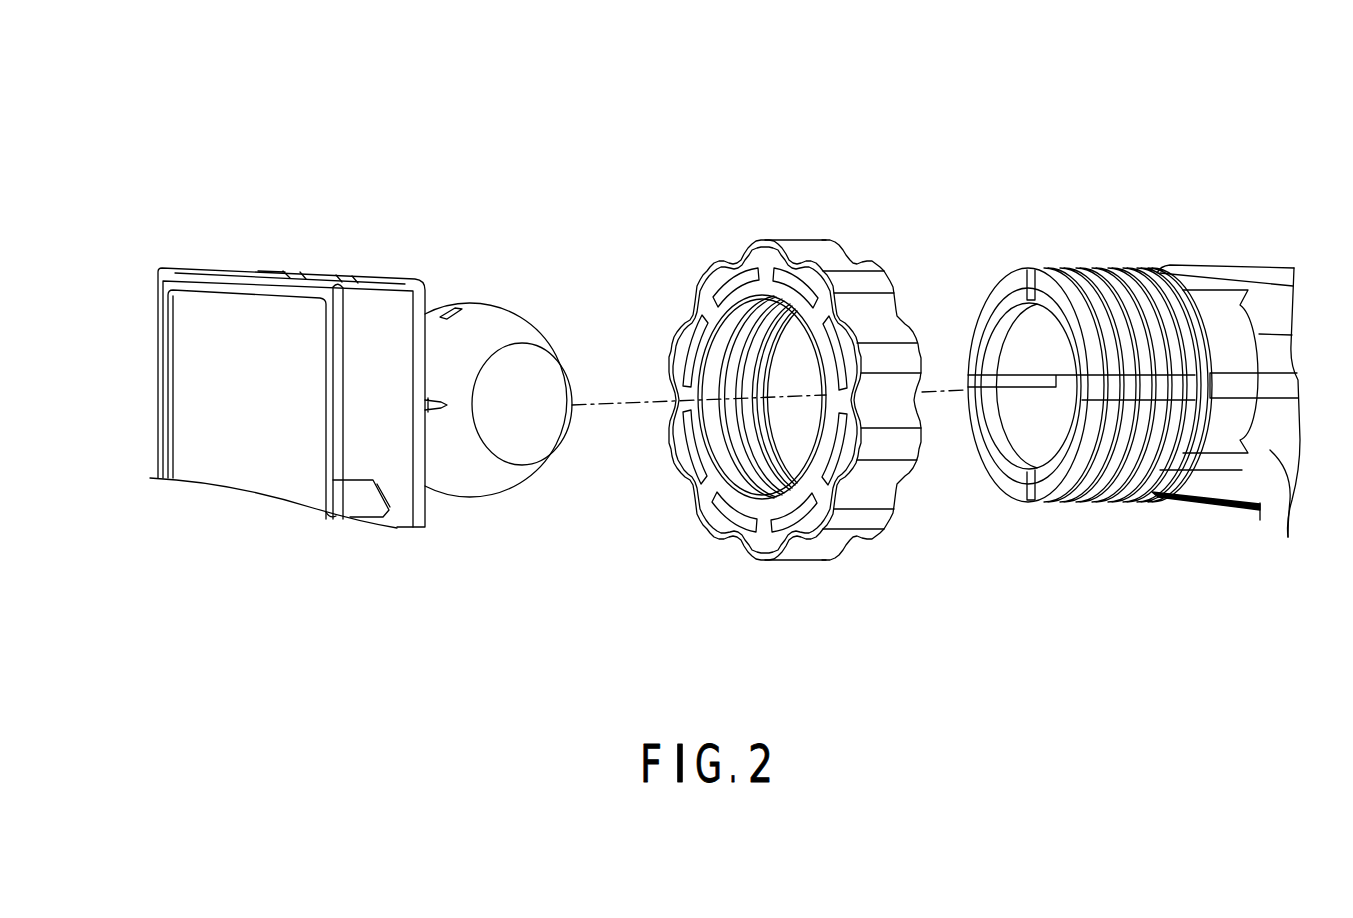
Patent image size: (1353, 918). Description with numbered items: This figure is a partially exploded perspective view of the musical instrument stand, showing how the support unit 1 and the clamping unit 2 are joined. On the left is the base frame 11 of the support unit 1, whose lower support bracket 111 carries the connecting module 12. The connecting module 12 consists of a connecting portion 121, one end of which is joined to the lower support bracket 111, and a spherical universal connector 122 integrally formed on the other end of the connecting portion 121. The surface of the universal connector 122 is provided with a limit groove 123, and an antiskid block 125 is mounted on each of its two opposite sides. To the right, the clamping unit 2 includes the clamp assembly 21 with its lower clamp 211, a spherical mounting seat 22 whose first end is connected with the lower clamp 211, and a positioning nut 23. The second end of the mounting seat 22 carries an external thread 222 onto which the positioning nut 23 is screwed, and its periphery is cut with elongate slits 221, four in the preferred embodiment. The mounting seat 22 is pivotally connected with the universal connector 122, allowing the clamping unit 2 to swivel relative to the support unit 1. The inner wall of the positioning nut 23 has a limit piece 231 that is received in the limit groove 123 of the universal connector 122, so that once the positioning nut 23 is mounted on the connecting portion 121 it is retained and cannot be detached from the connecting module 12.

The support unit 1 is at (198, 605).
The base frame 11 is at (263, 547).
The lower support bracket 111 is at (308, 508).
The connecting module 12 is at (460, 530).
The connecting portion 121 is at (420, 414).
The universal connector 122 is at (490, 480).
The limit groove 123 is at (447, 310).
The antiskid block 125 is at (545, 375).
The clamping unit 2 is at (1034, 616).
The clamp assembly 21 is at (1245, 480).
The lower clamp 211 is at (1280, 462).
The mounting seat 22 is at (1077, 510).
The slit 221 is at (990, 335).
The external thread 222 is at (1143, 495).
The positioning nut 23 is at (851, 246).
The limit piece 231 is at (758, 297).